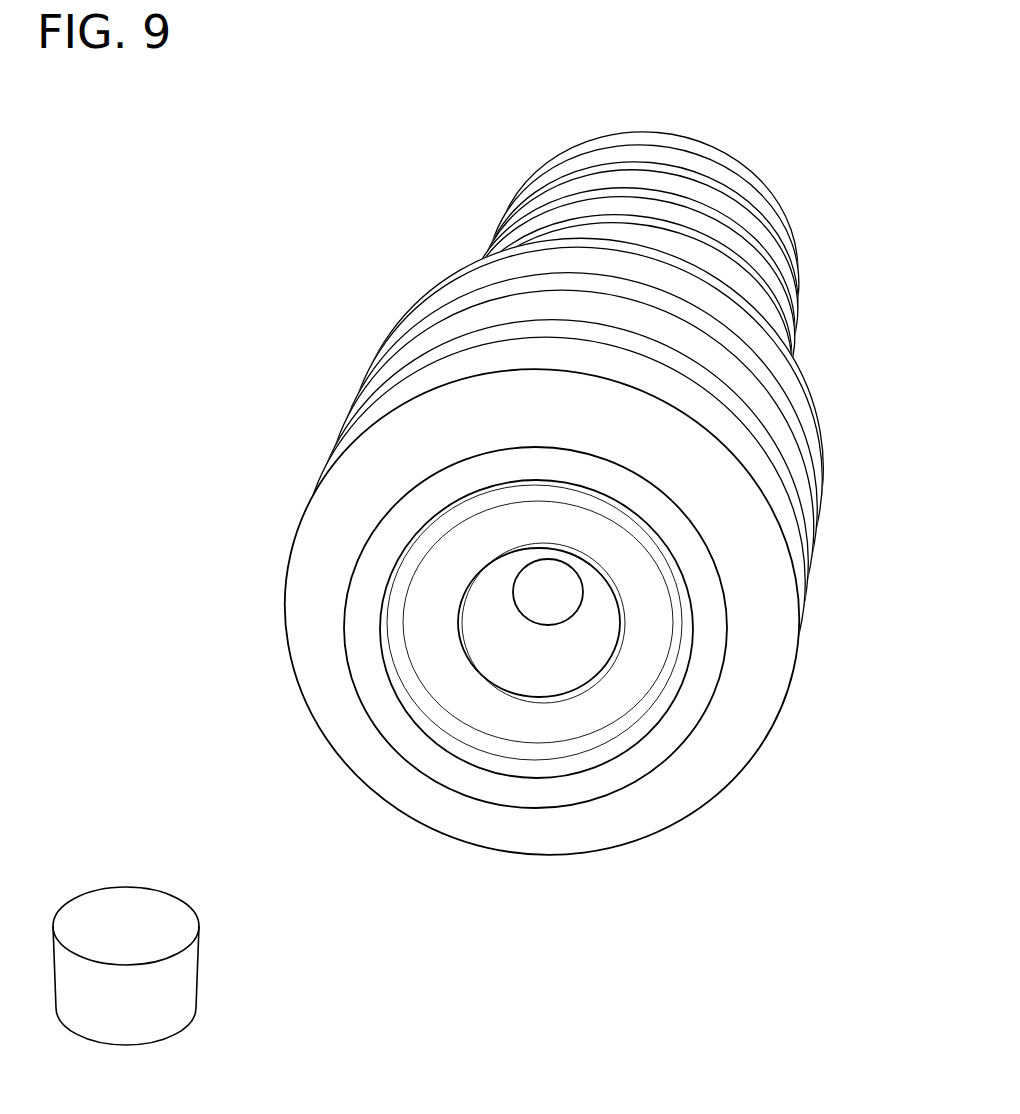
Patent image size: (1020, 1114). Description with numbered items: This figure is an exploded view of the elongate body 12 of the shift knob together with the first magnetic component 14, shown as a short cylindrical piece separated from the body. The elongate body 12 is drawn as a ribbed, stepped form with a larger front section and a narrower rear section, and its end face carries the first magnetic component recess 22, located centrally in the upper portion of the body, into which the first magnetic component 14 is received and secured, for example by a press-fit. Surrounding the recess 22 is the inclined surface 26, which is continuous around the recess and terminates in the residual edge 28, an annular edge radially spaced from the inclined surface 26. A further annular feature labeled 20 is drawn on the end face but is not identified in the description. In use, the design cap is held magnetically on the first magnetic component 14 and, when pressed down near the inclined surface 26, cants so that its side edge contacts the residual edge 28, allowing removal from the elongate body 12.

The elongate body 12 is at (748, 530).
The first magnetic component 14 is at (180, 985).
The central boss 20 is at (528, 682).
The first magnetic component recess 22 is at (500, 620).
The inclined surface 26 is at (662, 646).
The residual edge 28 is at (638, 725).